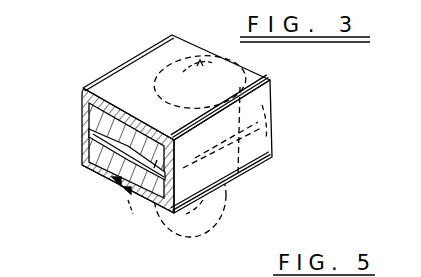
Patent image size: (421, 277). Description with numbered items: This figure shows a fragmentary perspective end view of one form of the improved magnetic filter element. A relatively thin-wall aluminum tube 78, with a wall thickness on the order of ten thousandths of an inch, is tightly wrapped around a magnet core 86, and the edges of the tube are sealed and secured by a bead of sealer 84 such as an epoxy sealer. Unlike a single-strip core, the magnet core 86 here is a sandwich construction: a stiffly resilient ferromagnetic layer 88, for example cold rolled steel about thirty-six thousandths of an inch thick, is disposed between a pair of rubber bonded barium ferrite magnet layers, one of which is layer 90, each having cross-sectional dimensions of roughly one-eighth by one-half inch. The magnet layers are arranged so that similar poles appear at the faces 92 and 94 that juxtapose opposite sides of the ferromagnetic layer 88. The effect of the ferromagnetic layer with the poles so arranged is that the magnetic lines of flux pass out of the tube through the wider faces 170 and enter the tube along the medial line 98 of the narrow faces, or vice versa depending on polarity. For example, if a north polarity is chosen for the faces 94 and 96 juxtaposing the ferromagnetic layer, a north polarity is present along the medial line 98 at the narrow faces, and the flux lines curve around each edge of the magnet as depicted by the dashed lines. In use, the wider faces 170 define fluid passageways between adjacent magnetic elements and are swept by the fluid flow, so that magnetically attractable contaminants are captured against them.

The wider faces 170 is at (178, 55).
The aluminum tube 78 is at (260, 101).
The magnet core 86 is at (93, 93).
The face 92 is at (100, 110).
The face 94 is at (148, 133).
The ferromagnetic layer 88 is at (100, 143).
The rubber bonded barium ferrite layer 90 is at (95, 165).
The bead of sealer 84 is at (125, 188).
The face 96 is at (154, 168).
The medial line 98 is at (275, 143).